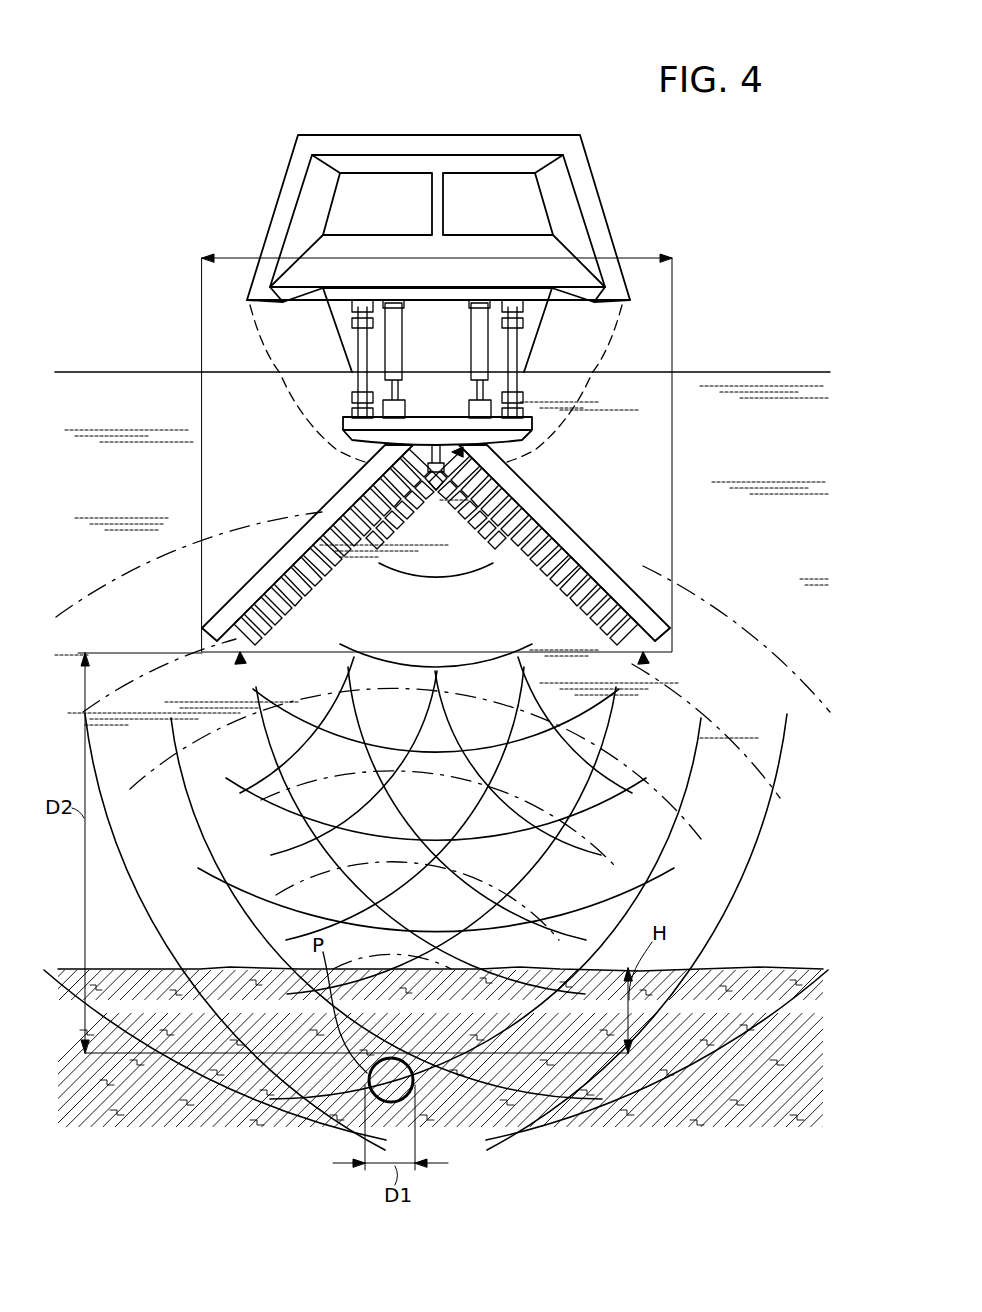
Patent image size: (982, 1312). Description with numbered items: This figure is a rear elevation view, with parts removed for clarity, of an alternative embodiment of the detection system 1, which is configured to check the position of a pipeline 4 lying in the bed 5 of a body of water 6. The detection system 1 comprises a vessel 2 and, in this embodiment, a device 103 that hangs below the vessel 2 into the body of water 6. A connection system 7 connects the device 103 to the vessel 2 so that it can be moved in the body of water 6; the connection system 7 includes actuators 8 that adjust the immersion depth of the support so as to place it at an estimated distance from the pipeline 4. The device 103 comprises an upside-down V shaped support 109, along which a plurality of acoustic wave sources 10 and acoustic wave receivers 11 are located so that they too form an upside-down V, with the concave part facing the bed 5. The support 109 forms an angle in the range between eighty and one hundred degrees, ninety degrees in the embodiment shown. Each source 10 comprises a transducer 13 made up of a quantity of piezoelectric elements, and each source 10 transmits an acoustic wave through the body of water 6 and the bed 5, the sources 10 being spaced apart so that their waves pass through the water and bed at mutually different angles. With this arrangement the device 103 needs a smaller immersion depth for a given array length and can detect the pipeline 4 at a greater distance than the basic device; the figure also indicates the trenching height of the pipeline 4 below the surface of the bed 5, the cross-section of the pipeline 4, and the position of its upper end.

The detection system 1 is at (228, 157).
The vessel 2 is at (601, 206).
The pipeline 4 is at (412, 1080).
The bed 5 is at (777, 1045).
The body of water 6 is at (768, 445).
The connection system 7 is at (342, 406).
The actuators 8 is at (395, 352).
The acoustic wave sources 10 is at (437, 472).
The acoustic wave receivers 11 is at (388, 503).
The transducer 13 is at (465, 452).
The device 103 is at (645, 605).
The upside-down V shaped support 109 is at (282, 560).